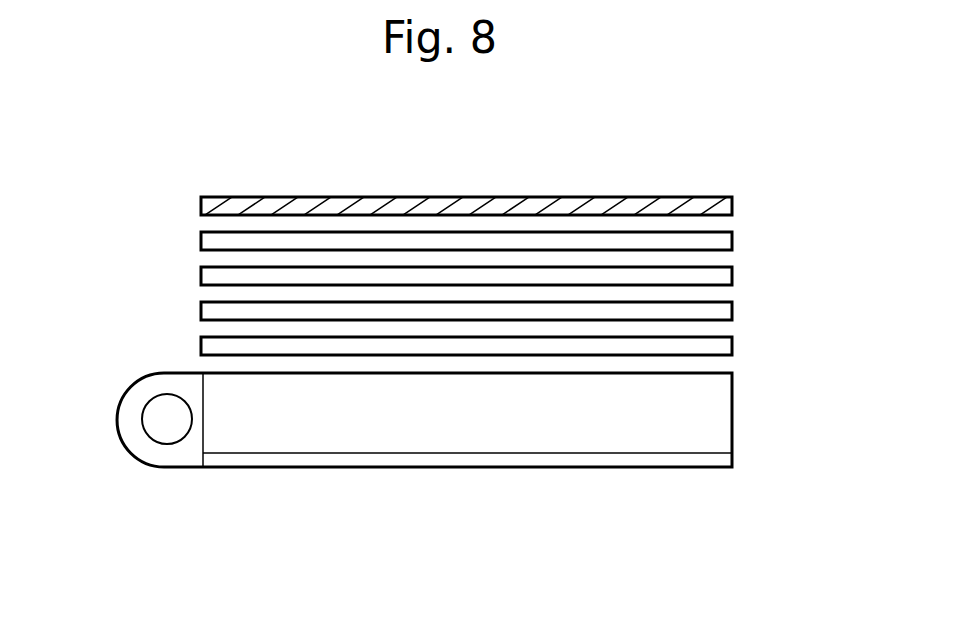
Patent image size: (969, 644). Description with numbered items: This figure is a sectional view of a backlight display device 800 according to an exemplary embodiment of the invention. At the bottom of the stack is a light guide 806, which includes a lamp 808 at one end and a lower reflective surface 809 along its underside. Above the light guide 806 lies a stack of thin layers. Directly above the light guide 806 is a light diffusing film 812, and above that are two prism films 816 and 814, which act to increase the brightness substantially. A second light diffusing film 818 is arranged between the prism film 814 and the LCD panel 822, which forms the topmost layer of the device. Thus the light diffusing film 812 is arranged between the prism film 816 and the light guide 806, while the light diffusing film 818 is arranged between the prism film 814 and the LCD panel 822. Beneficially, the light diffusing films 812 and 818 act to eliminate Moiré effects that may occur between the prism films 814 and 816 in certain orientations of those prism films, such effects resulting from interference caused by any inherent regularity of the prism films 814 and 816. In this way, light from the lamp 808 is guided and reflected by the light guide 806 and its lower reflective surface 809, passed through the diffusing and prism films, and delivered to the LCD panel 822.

The backlight display device 800 is at (637, 167).
The LCD panel 822 is at (732, 206).
The light diffusing film 818 is at (732, 241).
The prism film 814 is at (732, 276).
The prism film 816 is at (732, 311).
The light diffusing film 812 is at (732, 346).
The light guide 806 is at (732, 413).
The lamp 808 is at (142, 423).
The lower reflective surface 809 is at (594, 458).